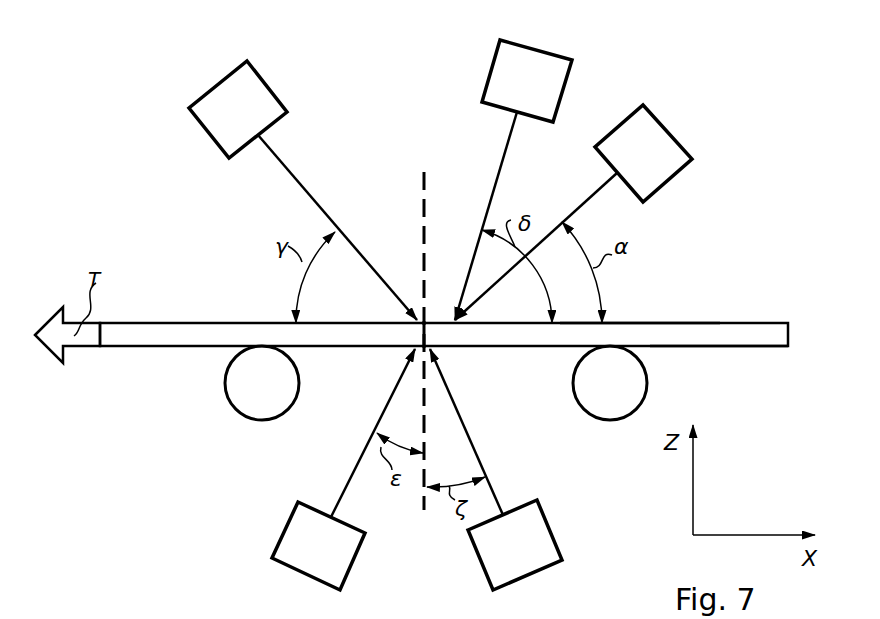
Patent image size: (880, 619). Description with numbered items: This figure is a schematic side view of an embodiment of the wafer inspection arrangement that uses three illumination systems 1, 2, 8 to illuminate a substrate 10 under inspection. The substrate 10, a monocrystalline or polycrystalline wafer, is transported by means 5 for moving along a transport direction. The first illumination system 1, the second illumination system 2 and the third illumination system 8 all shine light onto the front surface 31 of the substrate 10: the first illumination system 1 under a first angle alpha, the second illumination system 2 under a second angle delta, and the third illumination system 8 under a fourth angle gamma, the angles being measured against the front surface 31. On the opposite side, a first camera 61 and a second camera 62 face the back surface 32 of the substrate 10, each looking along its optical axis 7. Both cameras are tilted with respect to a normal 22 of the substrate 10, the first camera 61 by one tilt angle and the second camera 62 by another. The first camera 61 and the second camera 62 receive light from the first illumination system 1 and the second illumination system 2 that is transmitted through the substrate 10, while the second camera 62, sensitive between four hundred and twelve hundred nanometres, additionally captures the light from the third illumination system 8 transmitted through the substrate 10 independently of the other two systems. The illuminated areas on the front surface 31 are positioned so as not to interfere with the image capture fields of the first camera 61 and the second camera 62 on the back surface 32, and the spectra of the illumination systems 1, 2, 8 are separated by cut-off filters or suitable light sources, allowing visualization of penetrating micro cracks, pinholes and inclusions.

The first illumination system 1 is at (633, 163).
The second illumination system 2 is at (517, 96).
The third illumination system 8 is at (232, 130).
The substrate 10 is at (766, 337).
The normal 22 is at (420, 227).
The front surface 31 is at (638, 321).
The back surface 32 is at (733, 350).
The means for moving 5 is at (232, 383).
The first camera 61 is at (293, 538).
The second camera 62 is at (550, 548).
The optical axis 7 is at (363, 452).